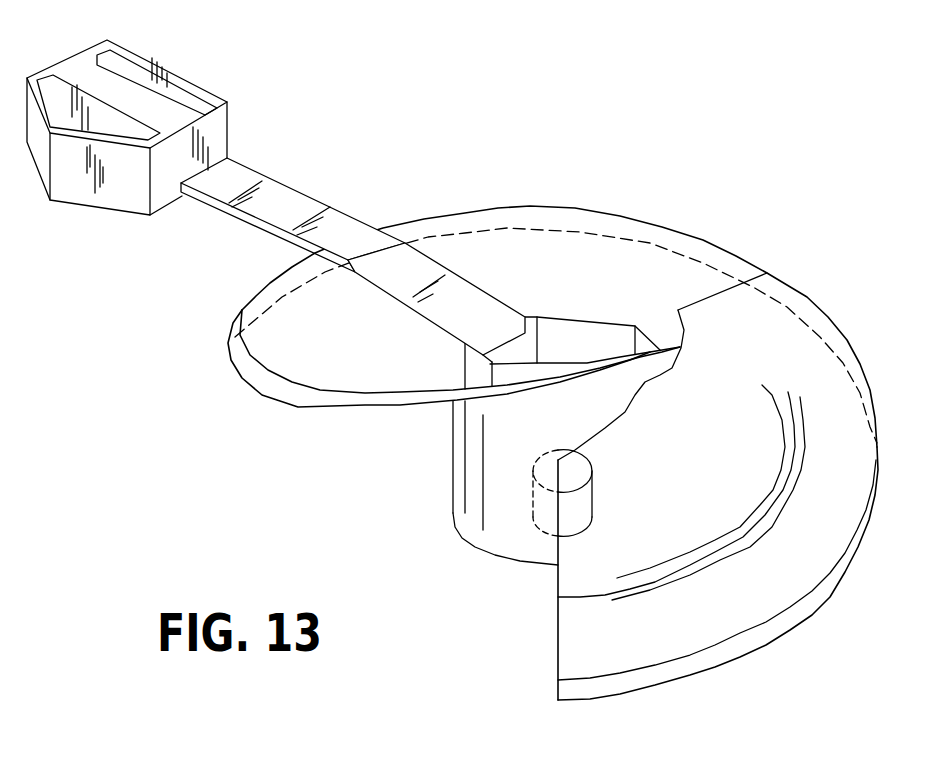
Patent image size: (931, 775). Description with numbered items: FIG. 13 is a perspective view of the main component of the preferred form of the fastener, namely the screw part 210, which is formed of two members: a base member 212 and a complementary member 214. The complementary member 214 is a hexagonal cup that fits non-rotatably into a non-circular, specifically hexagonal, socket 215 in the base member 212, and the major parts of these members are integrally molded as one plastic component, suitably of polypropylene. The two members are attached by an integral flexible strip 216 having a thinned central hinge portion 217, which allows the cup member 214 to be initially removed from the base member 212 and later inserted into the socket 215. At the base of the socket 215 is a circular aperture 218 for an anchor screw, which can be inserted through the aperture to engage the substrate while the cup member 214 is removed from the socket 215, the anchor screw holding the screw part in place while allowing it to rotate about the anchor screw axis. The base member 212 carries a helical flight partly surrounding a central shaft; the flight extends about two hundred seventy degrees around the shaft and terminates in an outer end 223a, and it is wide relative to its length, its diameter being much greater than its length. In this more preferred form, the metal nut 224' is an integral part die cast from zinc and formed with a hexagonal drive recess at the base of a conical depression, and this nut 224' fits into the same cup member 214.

The screw part 210 is at (642, 140).
The base member 212 is at (453, 450).
The complementary member 214 is at (232, 92).
The socket 215 is at (585, 337).
The flexible strip 216 is at (293, 182).
The central hinge portion 217 is at (382, 252).
The circular aperture 218 is at (533, 515).
The outer end 223a is at (717, 293).
The metal nut 224' is at (213, 64).